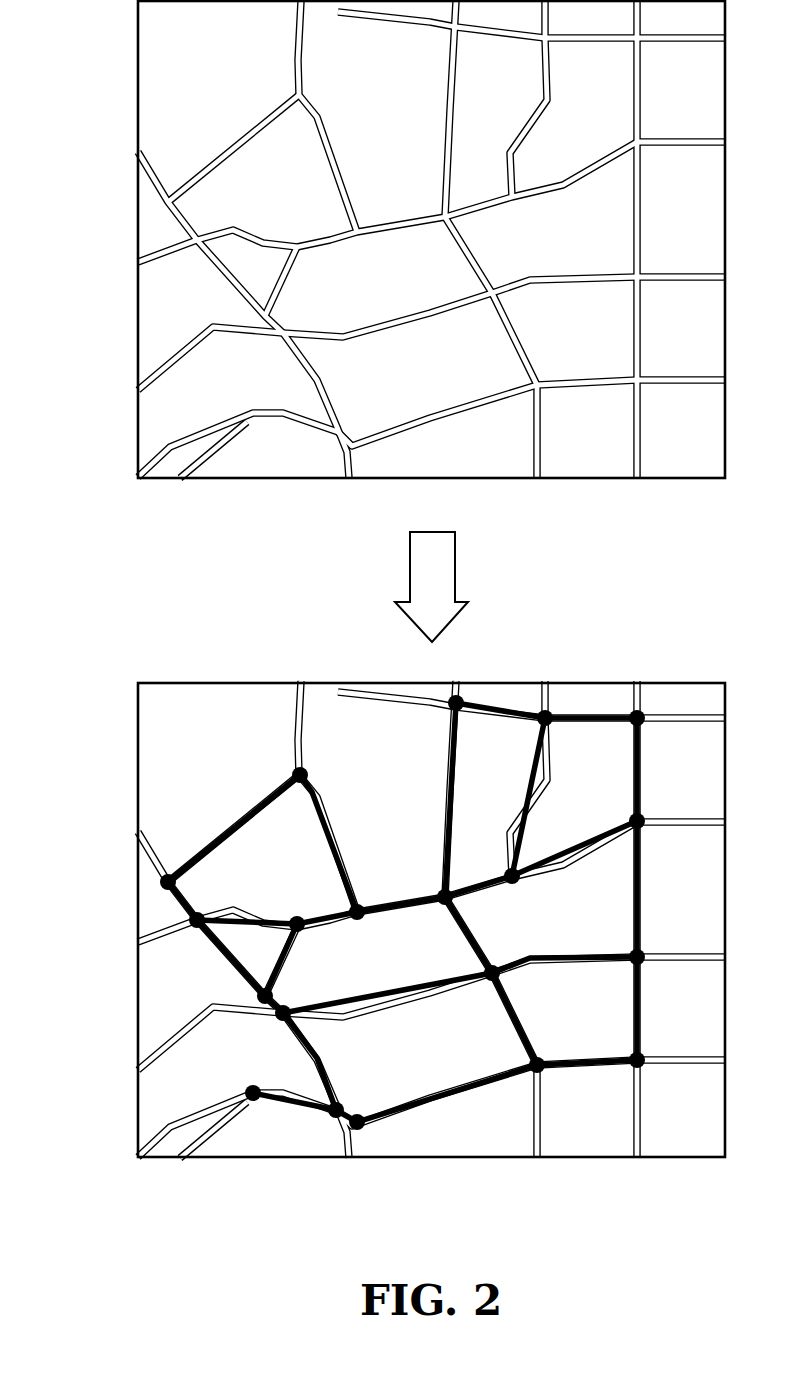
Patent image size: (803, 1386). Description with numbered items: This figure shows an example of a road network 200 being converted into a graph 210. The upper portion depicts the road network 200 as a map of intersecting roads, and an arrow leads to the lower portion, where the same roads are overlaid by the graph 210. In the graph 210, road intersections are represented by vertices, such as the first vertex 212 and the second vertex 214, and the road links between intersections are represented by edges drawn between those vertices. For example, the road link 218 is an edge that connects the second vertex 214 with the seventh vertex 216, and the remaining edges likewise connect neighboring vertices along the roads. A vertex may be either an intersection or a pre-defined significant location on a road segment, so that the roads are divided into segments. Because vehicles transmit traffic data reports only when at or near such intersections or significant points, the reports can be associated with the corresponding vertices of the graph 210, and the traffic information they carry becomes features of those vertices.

The road network 200 is at (137, 231).
The graph 210 is at (137, 771).
The vertex V1 212 is at (256, 1101).
The vertex V2 214 is at (163, 882).
The vertex V7 216 is at (300, 775).
The road link 218 is at (249, 813).